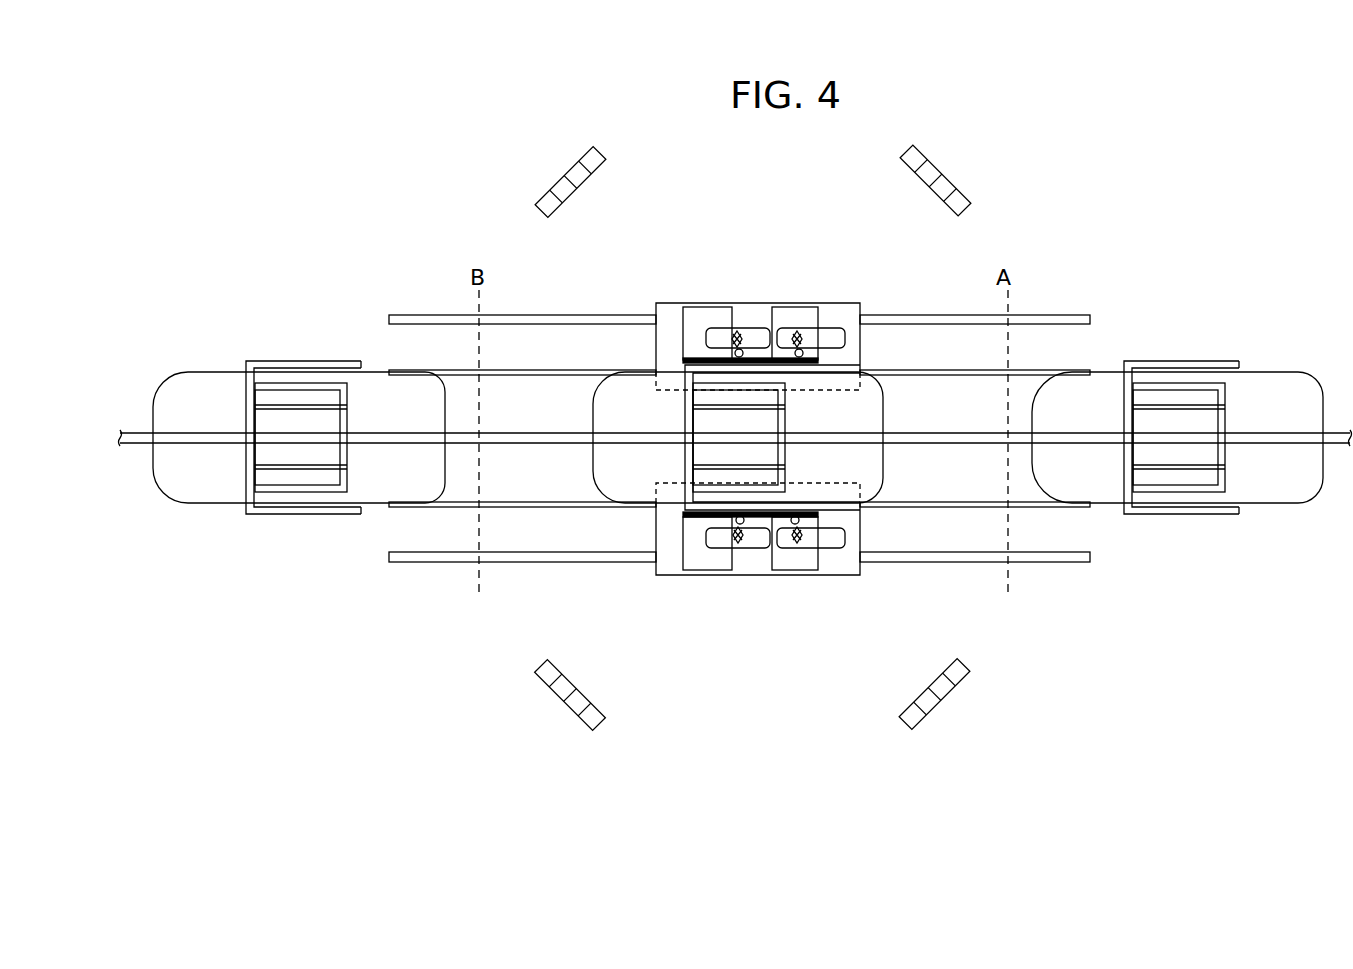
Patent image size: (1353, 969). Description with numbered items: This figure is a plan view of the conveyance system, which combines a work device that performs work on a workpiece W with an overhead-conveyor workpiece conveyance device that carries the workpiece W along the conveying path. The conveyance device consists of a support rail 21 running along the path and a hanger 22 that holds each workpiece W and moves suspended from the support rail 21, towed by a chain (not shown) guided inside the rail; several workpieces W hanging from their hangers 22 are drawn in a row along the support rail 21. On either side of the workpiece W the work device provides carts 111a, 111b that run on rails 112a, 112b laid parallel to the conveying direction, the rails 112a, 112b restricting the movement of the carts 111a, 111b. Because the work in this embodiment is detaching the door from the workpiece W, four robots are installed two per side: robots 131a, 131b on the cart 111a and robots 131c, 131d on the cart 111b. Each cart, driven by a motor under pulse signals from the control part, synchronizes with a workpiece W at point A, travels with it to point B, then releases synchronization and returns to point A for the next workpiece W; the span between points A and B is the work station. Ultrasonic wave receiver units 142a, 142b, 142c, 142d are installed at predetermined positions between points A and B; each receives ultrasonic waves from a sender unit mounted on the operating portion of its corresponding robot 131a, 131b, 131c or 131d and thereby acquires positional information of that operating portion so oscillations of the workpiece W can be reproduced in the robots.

The support rail 21 is at (124, 432).
The hanger 22 is at (306, 361).
The workpiece W is at (210, 372).
The cart 111a is at (660, 302).
The cart 111b is at (668, 578).
The rail 112a is at (590, 372).
The rail 112b is at (590, 501).
The robot 131a is at (737, 330).
The robot 131b is at (797, 331).
The robot 131c is at (740, 548).
The robot 131d is at (797, 548).
The ultrasonic wave receiver unit 142a is at (550, 185).
The ultrasonic wave receiver unit 142b is at (942, 172).
The ultrasonic wave receiver unit 142c is at (565, 703).
The ultrasonic wave receiver unit 142d is at (945, 703).